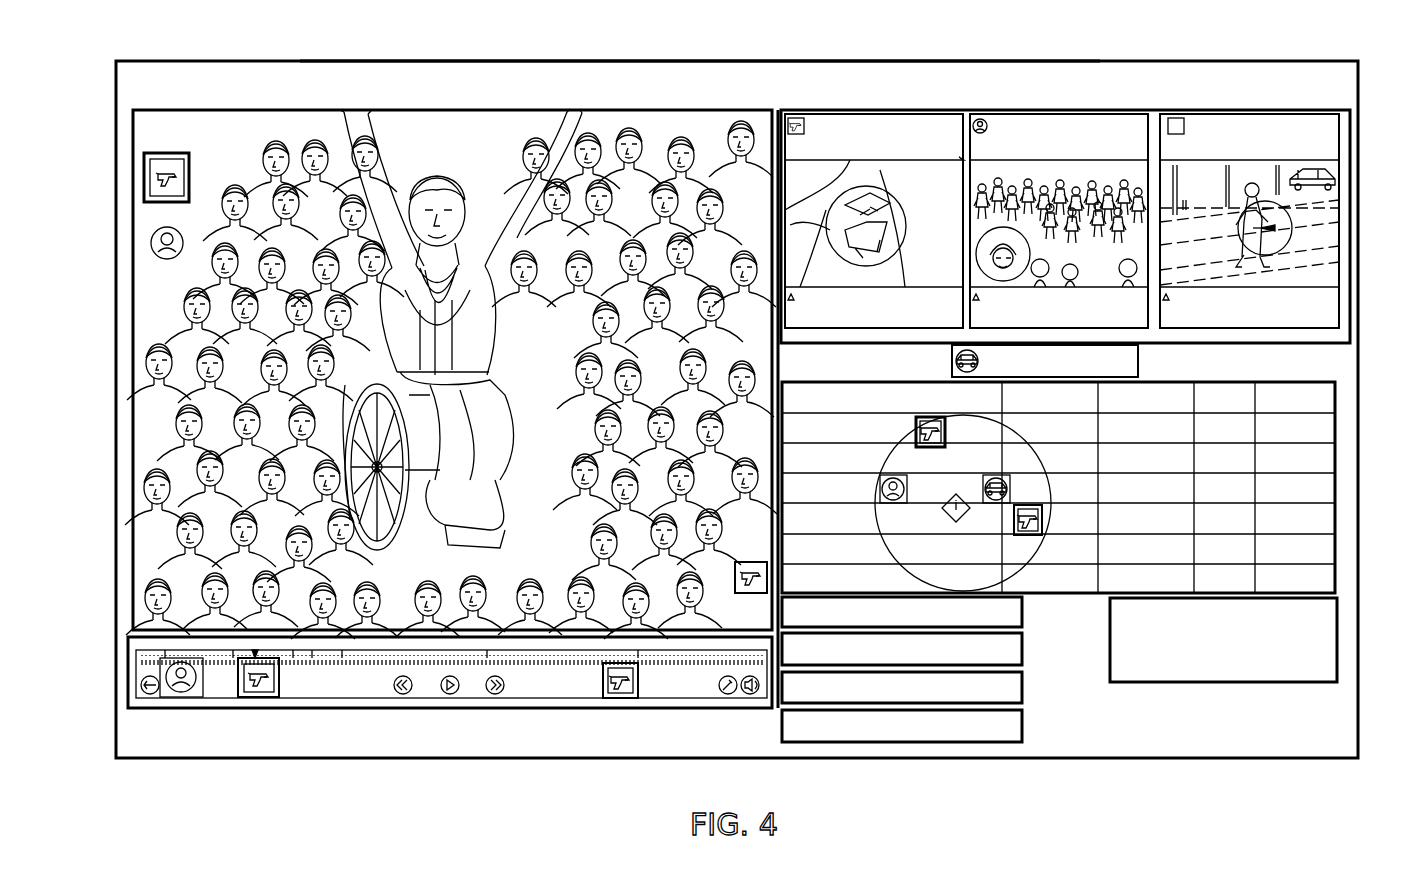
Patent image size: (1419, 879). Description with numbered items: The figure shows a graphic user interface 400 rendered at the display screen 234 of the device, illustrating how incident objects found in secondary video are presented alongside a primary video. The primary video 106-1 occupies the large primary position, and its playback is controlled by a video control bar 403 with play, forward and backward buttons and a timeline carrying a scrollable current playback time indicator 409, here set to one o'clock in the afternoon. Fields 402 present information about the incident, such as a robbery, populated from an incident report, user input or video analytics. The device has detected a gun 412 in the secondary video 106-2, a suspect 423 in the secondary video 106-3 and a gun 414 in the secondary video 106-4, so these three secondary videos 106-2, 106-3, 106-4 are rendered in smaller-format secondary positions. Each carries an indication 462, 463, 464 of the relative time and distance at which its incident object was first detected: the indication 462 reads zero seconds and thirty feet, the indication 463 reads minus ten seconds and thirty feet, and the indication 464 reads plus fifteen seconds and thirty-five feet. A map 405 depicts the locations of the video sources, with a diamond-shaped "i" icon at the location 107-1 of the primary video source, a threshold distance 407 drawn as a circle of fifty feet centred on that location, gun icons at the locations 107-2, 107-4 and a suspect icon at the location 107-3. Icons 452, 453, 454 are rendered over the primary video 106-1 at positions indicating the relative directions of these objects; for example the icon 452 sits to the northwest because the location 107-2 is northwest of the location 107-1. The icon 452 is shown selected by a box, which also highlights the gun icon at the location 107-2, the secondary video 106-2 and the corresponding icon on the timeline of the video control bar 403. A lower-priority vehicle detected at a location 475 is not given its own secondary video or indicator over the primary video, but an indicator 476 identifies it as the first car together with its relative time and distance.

The display screen 234 is at (736, 61).
The primary video 106-1 is at (160, 115).
The secondary video 106-2 is at (835, 195).
The secondary video 106-3 is at (1058, 113).
The secondary video 106-4 is at (1289, 195).
The suspect 423 is at (970, 170).
The gun 412 is at (796, 182).
The gun 414 is at (1290, 218).
The icon 452 is at (144, 178).
The icon 453 is at (151, 243).
The icon 454 is at (772, 578).
The indication 462 is at (868, 328).
The indication 463 is at (1125, 328).
The indication 464 is at (1268, 328).
The indicator 476 is at (1100, 377).
The location 475 is at (1010, 472).
The map 405 is at (1325, 518).
The location 107-1 is at (943, 512).
The location 107-2 is at (916, 434).
The location 107-3 is at (880, 491).
The location 107-4 is at (1014, 520).
The threshold distance 407 is at (1038, 562).
The current playback time indicator 409 is at (254, 656).
The video control bar 403 is at (452, 708).
The fields 402 is at (1032, 686).
The graphic user interface 400 is at (1262, 699).